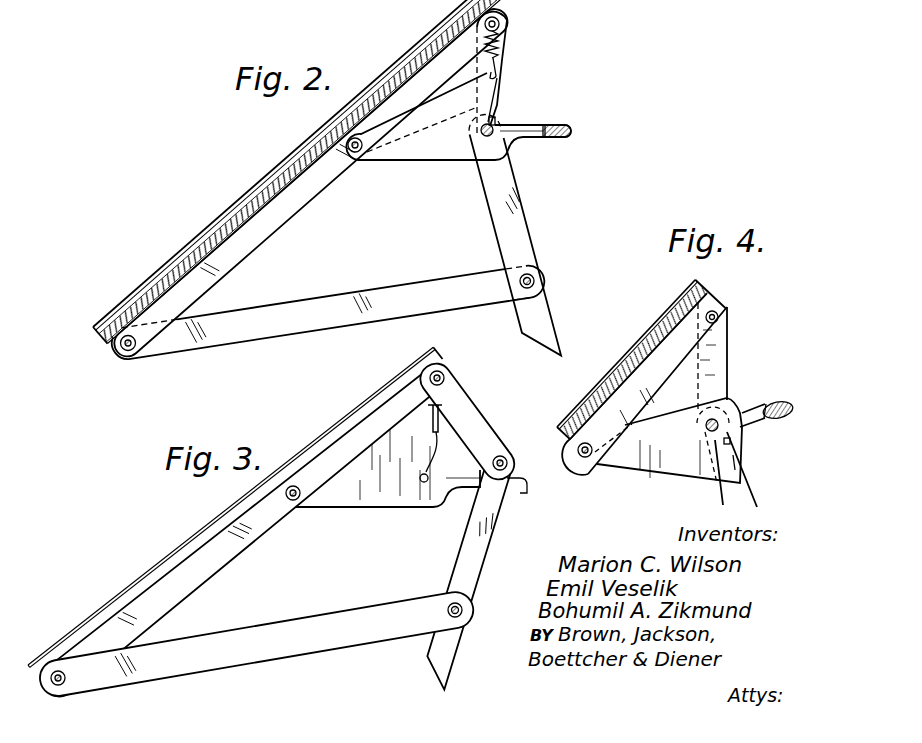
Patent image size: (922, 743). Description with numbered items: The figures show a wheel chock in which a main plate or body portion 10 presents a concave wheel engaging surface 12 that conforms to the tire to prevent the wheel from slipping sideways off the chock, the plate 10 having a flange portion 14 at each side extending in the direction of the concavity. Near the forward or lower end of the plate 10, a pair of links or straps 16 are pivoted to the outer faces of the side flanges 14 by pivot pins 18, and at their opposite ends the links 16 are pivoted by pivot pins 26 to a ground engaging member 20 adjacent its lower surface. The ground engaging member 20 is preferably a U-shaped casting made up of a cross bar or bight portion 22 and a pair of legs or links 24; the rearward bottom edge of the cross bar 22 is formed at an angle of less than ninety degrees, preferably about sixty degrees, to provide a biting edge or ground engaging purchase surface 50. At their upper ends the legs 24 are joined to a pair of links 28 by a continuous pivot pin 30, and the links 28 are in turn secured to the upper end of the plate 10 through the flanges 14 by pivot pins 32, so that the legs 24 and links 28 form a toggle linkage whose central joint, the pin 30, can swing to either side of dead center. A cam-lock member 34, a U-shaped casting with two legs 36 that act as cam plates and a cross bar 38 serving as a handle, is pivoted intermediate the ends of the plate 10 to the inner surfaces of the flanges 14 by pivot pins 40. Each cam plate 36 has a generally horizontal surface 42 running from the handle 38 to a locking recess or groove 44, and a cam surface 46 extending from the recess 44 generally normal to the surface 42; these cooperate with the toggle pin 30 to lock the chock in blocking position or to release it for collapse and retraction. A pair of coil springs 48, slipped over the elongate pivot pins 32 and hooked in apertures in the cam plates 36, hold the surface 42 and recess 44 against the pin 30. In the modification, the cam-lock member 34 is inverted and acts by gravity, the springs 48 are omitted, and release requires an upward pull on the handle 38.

In FIG. 2, the main plate or body portion 10 is at (252, 204).
In FIG. 3, the main plate or body portion 10 is at (157, 565).
In FIG. 4, the main plate or body portion 10 is at (630, 366).
In FIG. 2, the wheel engaging surface 12 is at (192, 246).
In FIG. 4, the wheel engaging surface 12 is at (640, 342).
In FIG. 2, the flange portion 14 is at (316, 198).
In FIG. 3, the flange portion 14 is at (233, 557).
In FIG. 4, the flange portion 14 is at (675, 342).
In FIG. 2, the links or straps 16 is at (336, 288).
In FIG. 3, the links or straps 16 is at (283, 626).
In FIG. 2, the pivot pins 18 is at (130, 350).
In FIG. 3, the pivot pins 18 is at (56, 670).
In FIG. 2, the ground engaging member 20 is at (547, 316).
In FIG. 3, the ground engaging member 20 is at (425, 653).
In FIG. 2, the cross bar or bight portion 22 is at (533, 333).
In FIG. 3, the cross bar or bight portion 22 is at (432, 652).
In FIG. 2, the legs or links 24 is at (514, 210).
In FIG. 3, the legs or links 24 is at (466, 533).
In FIG. 4, the legs or links 24 is at (747, 493).
In FIG. 2, the pivot pins 26 is at (533, 272).
In FIG. 3, the pivot pins 26 is at (450, 607).
In FIG. 2, the links 28 is at (512, 48).
In FIG. 3, the links 28 is at (470, 412).
In FIG. 4, the links 28 is at (717, 340).
In FIG. 2, the pivot pin 30 is at (484, 138).
In FIG. 3, the pivot pin 30 is at (503, 458).
In FIG. 4, the pivot pin 30 is at (703, 422).
In FIG. 2, the pivot pins 32 is at (505, 24).
In FIG. 3, the pivot pins 32 is at (447, 379).
In FIG. 4, the pivot pins 32 is at (717, 318).
In FIG. 2, the cam-lock member 34 is at (574, 126).
In FIG. 3, the cam-lock member 34 is at (514, 486).
In FIG. 4, the cam-lock member 34 is at (745, 410).
In FIG. 2, the legs or cam plates 36 is at (426, 161).
In FIG. 3, the legs or cam plates 36 is at (352, 509).
In FIG. 4, the legs or cam plates 36 is at (648, 462).
In FIG. 2, the cross bar or handle 38 is at (566, 138).
In FIG. 4, the cross bar or handle 38 is at (780, 402).
In FIG. 2, the pivot pins 40 is at (358, 153).
In FIG. 3, the pivot pins 40 is at (293, 505).
In FIG. 4, the pivot pins 40 is at (592, 462).
In FIG. 2, the horizontal surface 42 is at (524, 124).
In FIG. 3, the horizontal surface 42 is at (470, 475).
In FIG. 4, the horizontal surface 42 is at (742, 427).
In FIG. 2, the locking recess or groove 44 is at (496, 120).
In FIG. 3, the locking recess or groove 44 is at (421, 470).
In FIG. 4, the locking recess or groove 44 is at (730, 443).
In FIG. 2, the cam surface 46 is at (498, 94).
In FIG. 3, the cam surface 46 is at (440, 438).
In FIG. 4, the cam surface 46 is at (735, 463).
In FIG. 2, the coil springs 48 is at (504, 50).
In FIG. 3, the coil springs 48 is at (430, 410).
In FIG. 2, the biting edge or ground engaging purchase surface 50 is at (560, 358).
In FIG. 3, the biting edge or ground engaging purchase surface 50 is at (440, 693).